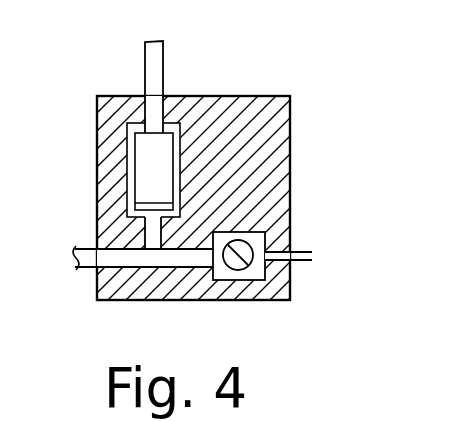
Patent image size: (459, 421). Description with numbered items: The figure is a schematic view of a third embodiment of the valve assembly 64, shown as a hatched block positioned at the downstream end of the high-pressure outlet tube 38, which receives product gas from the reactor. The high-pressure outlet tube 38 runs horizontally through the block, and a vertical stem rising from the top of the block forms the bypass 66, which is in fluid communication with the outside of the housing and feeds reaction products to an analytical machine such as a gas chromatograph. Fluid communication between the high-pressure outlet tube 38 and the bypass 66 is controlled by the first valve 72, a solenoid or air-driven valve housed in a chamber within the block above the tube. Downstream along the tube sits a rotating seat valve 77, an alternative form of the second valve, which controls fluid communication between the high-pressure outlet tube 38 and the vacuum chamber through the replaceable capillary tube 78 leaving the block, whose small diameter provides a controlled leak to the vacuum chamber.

The valve assembly 64 is at (308, 90).
The bypass 66 is at (163, 70).
The first valve 72 is at (135, 175).
The high-pressure outlet tube 38 is at (78, 268).
The rotating seat valve 77 is at (252, 280).
The replaceable capillary tube 78 is at (305, 260).